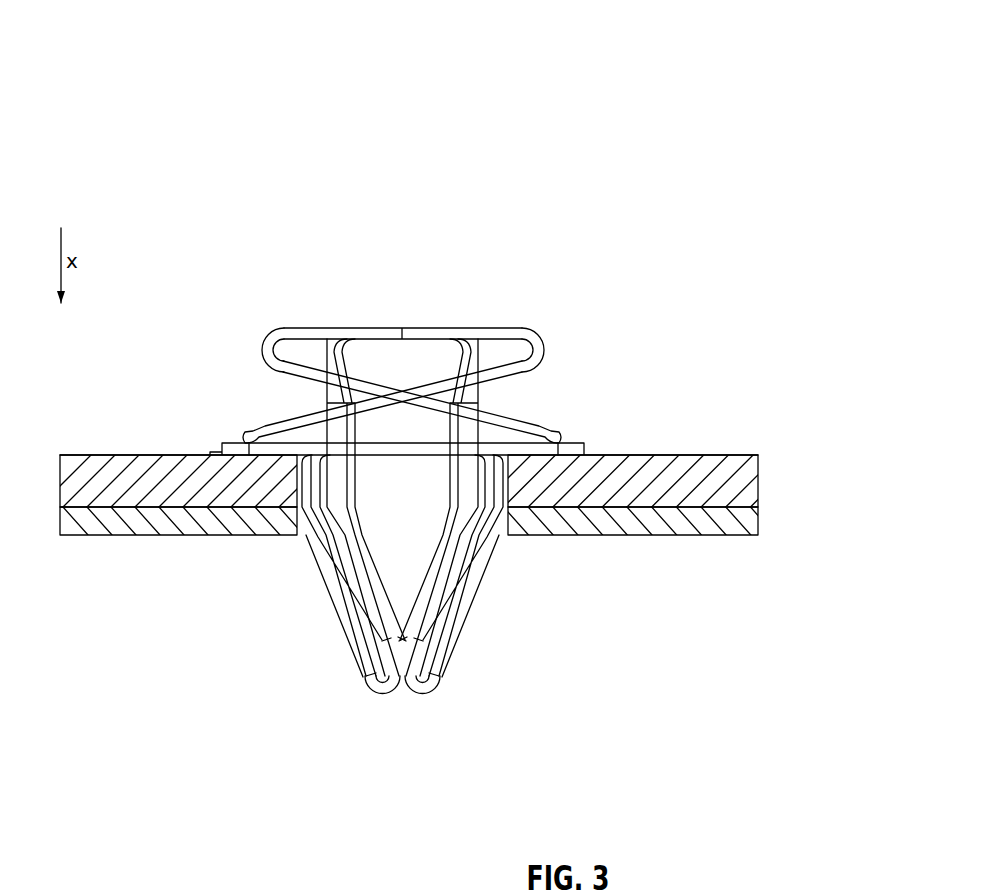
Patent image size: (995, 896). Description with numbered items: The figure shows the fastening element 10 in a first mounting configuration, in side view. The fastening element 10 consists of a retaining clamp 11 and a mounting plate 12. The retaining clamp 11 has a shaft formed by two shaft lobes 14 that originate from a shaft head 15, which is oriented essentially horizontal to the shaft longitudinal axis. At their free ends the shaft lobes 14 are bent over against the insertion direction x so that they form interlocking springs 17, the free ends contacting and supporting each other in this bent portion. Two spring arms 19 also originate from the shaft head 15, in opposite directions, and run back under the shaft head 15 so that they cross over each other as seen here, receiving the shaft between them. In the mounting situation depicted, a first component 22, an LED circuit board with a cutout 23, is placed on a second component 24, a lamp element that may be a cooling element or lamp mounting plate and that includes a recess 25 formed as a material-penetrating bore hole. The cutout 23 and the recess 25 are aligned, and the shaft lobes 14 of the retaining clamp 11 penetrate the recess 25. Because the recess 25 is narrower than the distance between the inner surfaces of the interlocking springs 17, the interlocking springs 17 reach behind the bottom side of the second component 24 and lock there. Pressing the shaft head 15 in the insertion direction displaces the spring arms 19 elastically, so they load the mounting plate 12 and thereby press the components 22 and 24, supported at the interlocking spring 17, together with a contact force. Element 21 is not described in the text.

The fastening element 10 is at (540, 227).
The retaining clamp 11 is at (435, 290).
The mounting plate 12 is at (590, 438).
The shaft lobe 14 is at (352, 588).
The shaft head 15 is at (400, 297).
The interlocking spring 17 is at (488, 592).
The spring arm 19 is at (255, 425).
The leg 21 is at (483, 505).
The first component 22 is at (768, 477).
The cutout 23 is at (412, 478).
The second component 24 is at (768, 523).
The recess 25 is at (407, 643).